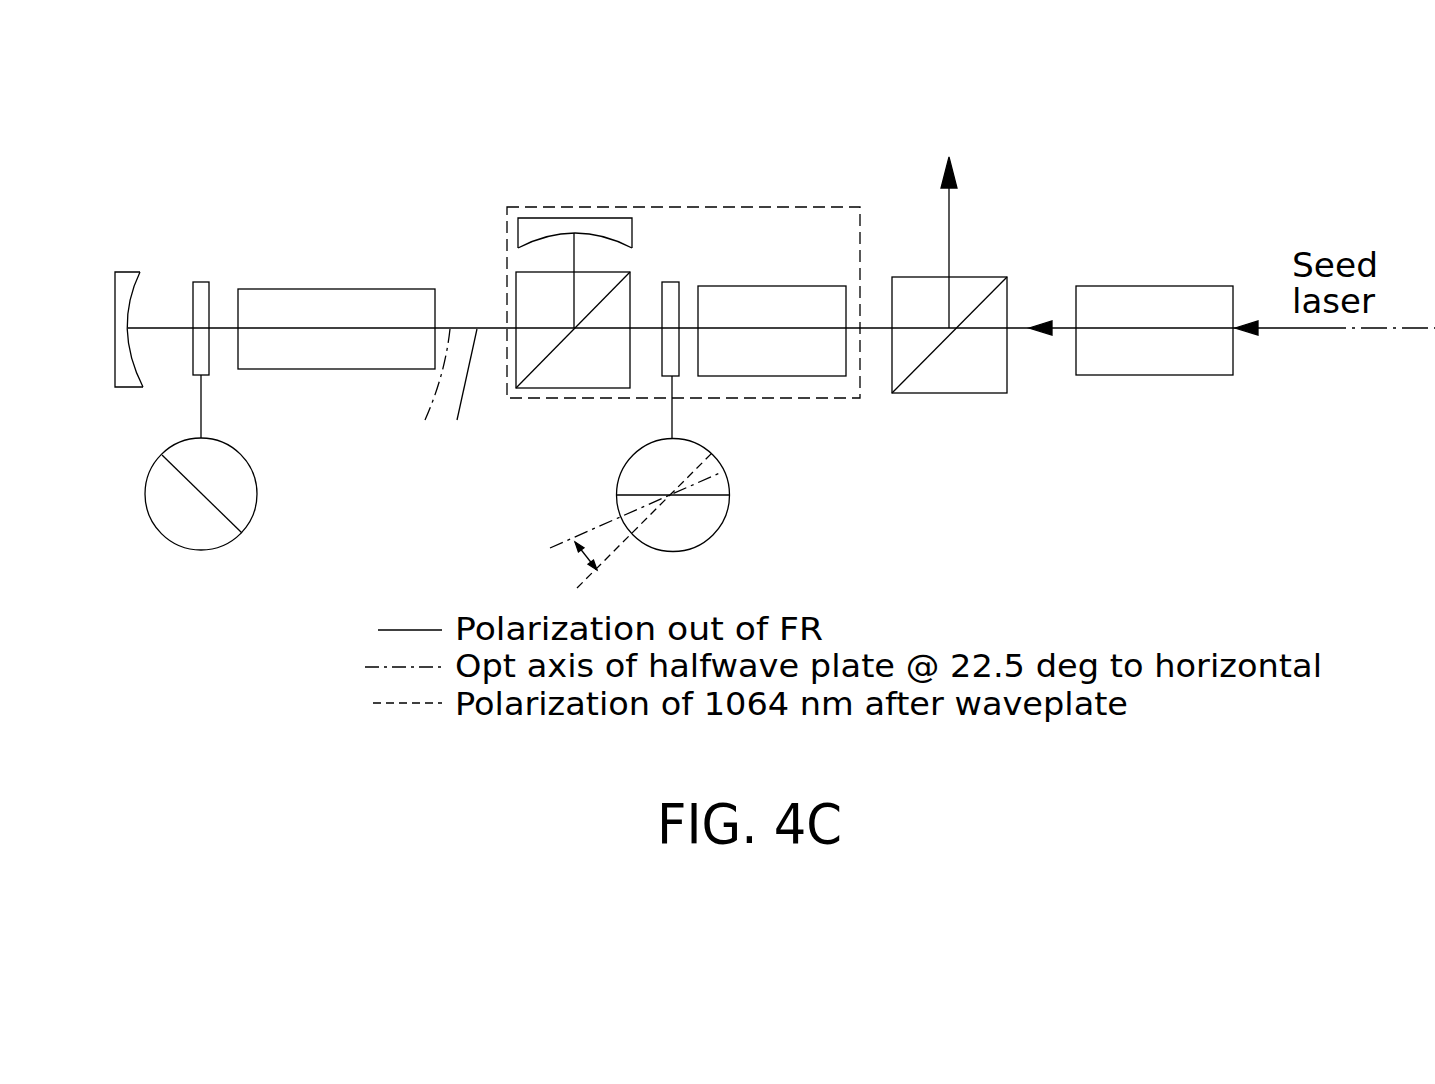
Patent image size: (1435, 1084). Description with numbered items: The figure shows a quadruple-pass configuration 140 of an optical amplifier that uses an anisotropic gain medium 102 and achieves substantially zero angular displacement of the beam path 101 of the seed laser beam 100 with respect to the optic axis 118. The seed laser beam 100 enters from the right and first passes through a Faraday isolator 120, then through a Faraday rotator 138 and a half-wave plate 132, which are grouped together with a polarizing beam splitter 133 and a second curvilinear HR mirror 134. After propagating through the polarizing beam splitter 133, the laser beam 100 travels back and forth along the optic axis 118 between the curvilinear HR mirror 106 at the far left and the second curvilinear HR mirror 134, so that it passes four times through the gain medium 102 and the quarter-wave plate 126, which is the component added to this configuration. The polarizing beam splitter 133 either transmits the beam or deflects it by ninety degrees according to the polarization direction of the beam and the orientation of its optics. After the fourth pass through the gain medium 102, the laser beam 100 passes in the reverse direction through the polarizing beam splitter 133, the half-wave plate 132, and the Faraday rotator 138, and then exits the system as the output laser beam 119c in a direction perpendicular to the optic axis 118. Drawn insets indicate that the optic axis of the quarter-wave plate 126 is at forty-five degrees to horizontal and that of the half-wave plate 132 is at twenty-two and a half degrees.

The seed laser beam 100 is at (1022, 328).
The beam path 101 is at (457, 390).
The anisotropic gain medium 102 is at (338, 298).
The curvilinear HR mirror 106 is at (130, 286).
The optic axis 118 is at (1403, 377).
The output laser beam 119c is at (952, 210).
The Faraday isolator 120 is at (1145, 297).
The quarter-wave plate 126 is at (202, 307).
The half-wave plate 132 is at (670, 278).
The polarizing beam splitter 133 is at (593, 288).
The second curvilinear HR mirror 134 is at (605, 227).
The Faraday rotator 138 is at (825, 293).
The quadruple-pass configuration 140 is at (1105, 182).